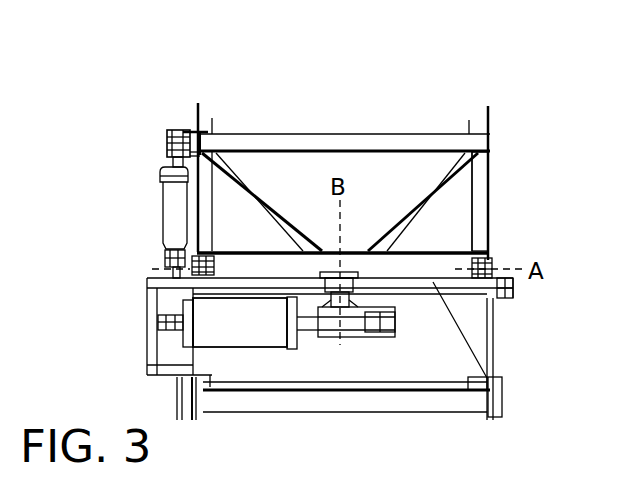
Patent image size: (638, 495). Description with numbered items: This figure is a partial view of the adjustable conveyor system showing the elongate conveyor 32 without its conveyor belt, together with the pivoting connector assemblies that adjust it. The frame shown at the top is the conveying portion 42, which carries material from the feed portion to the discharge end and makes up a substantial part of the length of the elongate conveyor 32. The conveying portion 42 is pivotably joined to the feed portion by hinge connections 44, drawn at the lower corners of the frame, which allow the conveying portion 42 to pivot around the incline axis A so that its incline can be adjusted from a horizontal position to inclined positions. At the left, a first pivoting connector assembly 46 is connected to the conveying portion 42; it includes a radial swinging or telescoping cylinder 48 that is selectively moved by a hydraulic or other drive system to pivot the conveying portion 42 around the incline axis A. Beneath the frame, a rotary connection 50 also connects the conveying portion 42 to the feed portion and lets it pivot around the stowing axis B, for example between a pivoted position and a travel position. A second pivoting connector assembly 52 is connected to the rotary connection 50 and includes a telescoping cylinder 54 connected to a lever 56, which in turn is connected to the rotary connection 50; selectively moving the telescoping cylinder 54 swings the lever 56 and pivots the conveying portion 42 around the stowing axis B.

The elongate conveyor 32 is at (480, 180).
The conveying portion 42 is at (505, 153).
The hinge connections 44 is at (215, 262).
The first pivoting connector assembly 46 is at (150, 158).
The telescoping cylinder 48 is at (161, 213).
The rotary connection 50 is at (355, 265).
The second pivoting connector assembly 52 is at (301, 359).
The telescoping cylinder 54 is at (240, 338).
The lever 56 is at (397, 310).